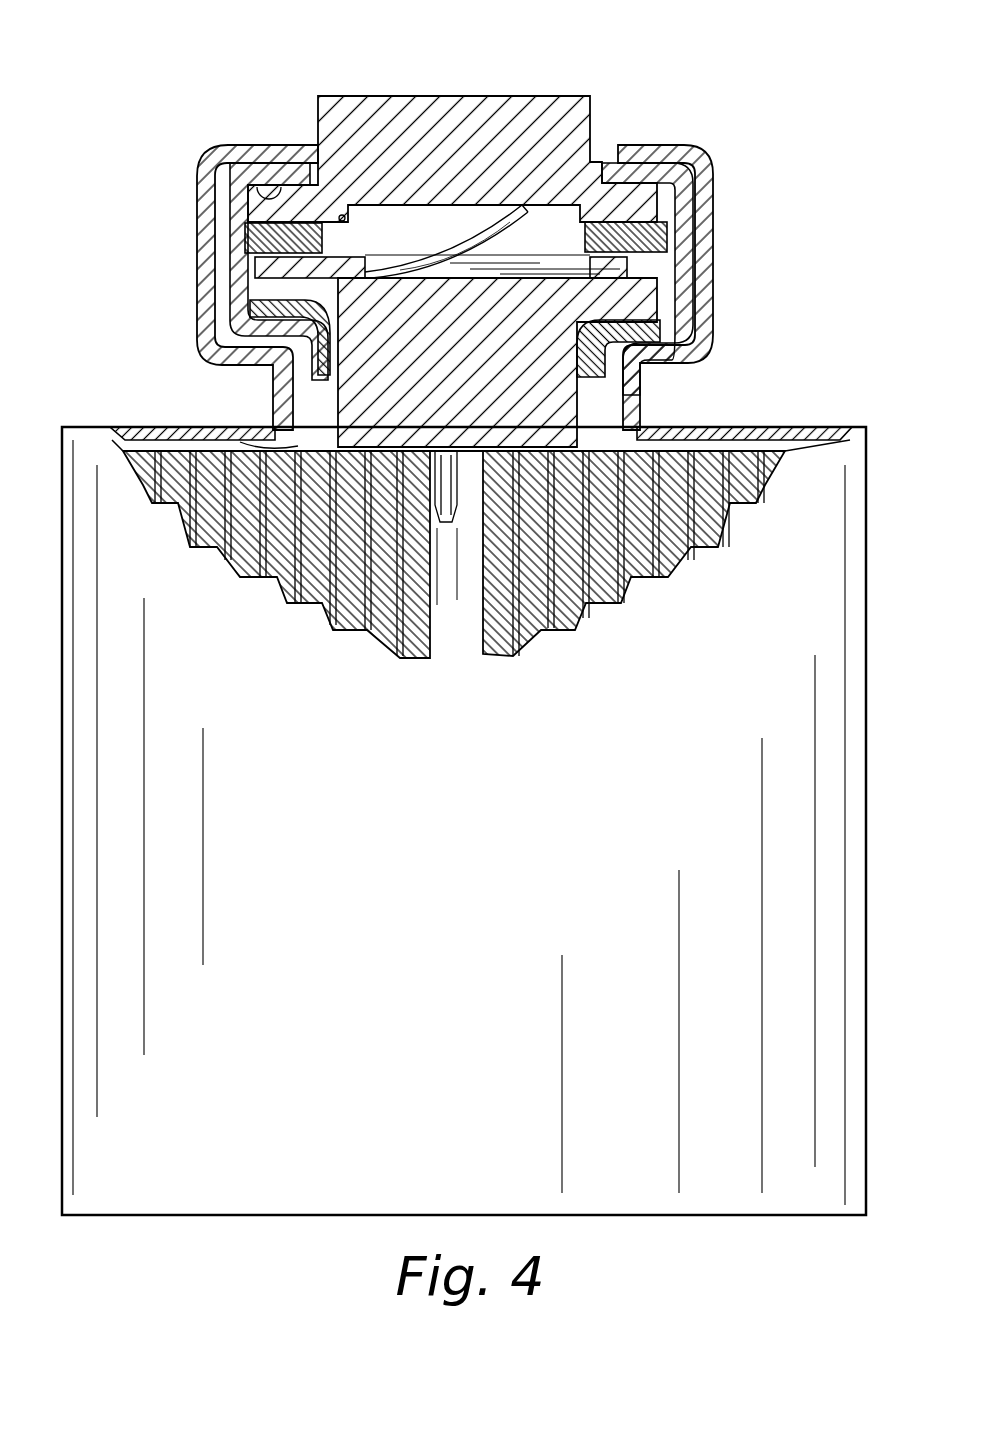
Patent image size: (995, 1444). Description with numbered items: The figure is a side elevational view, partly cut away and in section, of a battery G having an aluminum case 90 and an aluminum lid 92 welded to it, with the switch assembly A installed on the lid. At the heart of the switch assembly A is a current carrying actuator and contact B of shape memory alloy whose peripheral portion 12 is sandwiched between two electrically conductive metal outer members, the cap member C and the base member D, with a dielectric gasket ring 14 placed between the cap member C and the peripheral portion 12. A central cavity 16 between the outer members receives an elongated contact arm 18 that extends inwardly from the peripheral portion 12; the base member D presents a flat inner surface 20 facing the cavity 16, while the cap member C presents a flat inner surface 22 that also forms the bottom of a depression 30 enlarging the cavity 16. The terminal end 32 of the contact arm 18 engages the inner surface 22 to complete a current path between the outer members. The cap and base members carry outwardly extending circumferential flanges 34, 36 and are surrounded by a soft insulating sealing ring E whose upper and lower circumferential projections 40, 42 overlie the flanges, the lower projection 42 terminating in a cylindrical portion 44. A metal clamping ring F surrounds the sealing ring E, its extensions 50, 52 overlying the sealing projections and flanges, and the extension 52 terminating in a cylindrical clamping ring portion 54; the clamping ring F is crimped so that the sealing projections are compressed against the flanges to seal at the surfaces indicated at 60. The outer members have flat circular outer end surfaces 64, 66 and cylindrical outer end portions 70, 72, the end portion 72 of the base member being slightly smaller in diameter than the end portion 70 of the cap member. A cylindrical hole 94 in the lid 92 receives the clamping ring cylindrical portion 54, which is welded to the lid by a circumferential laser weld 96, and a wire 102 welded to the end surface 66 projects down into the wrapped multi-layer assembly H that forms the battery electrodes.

The peripheral portion 12 is at (280, 270).
The dielectric gasket ring 14 is at (280, 240).
The central cavity 16 is at (410, 217).
The contact arm 18 is at (408, 255).
The inner surface 20 is at (643, 285).
The inner surface 22 is at (568, 230).
The depression 30 is at (340, 216).
The terminal end 32 is at (520, 190).
The circumferential flange 34 is at (627, 203).
The circumferential flange 36 is at (640, 305).
The upper circumferential projection 40 is at (642, 145).
The lower circumferential projection 42 is at (657, 330).
The cylindrical portion 44 is at (598, 395).
The circumferential extension 50 is at (235, 163).
The circumferential extension 52 is at (265, 333).
The cylindrical clamping ring portion 54 is at (262, 395).
The sealing surface 60 is at (243, 183).
The outer end surface 64 is at (415, 96).
The outer end surface 66 is at (352, 425).
The cylindrical outer end portion 70 is at (318, 113).
The cylindrical outer end portion 72 is at (340, 425).
The case 90 is at (260, 1070).
The lid 92 is at (750, 428).
The cylindrical hole 94 is at (265, 425).
The laser weld 96 is at (644, 427).
The wire 102 is at (435, 582).
The switch assembly A is at (775, 128).
The current carrying actuator and contact B is at (310, 292).
The cap member C is at (511, 87).
The base member D is at (460, 385).
The sealing ring E is at (684, 287).
The clamping ring F is at (190, 181).
The battery G is at (714, 1222).
The wrapped multi-layer assembly H is at (608, 550).